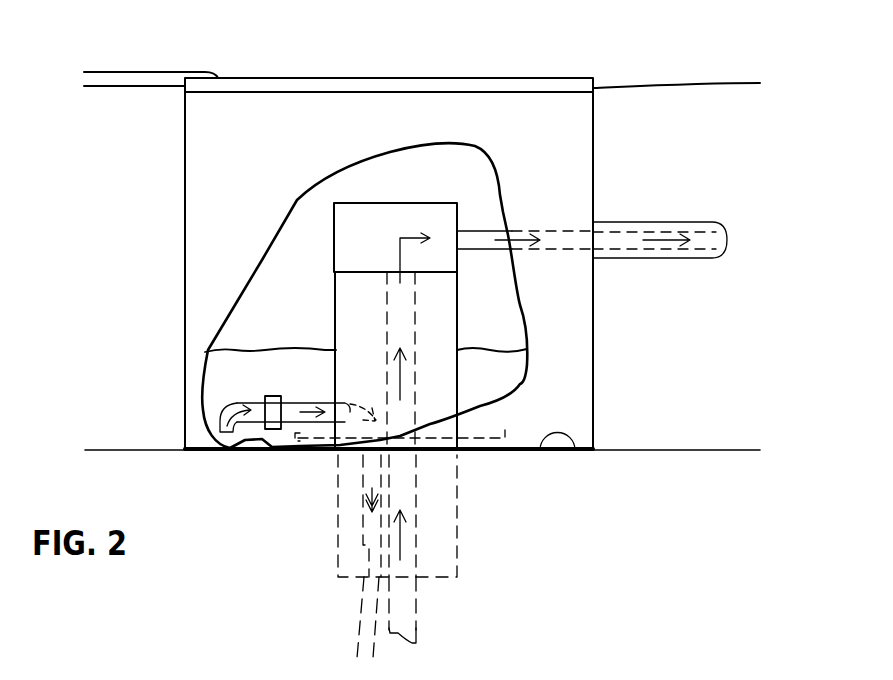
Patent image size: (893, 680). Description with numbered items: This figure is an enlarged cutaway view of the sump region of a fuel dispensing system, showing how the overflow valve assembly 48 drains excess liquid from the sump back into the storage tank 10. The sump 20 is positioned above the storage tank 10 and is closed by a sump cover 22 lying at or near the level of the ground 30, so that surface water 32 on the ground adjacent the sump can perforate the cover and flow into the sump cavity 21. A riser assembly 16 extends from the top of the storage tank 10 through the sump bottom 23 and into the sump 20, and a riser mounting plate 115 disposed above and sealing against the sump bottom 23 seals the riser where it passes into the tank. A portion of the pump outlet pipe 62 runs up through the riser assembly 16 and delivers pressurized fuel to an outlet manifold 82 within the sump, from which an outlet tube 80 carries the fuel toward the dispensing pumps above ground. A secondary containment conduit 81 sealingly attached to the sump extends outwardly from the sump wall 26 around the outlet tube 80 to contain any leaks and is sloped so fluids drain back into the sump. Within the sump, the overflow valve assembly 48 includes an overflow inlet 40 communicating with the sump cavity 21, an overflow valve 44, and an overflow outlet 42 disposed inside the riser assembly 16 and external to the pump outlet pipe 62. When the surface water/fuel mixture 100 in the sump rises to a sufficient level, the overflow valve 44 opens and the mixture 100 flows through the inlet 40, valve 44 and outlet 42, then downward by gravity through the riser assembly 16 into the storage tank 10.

The storage tank 10 is at (700, 450).
The riser assembly 16 is at (457, 313).
The sump 20 is at (210, 145).
The sump cavity 21 is at (502, 313).
The sump cover 22 is at (557, 83).
The sump bottom 23 is at (577, 452).
The sump wall 26 is at (597, 192).
The ground 30 is at (68, 183).
The surface water 32 is at (150, 78).
The overflow inlet 40 is at (232, 405).
The overflow outlet 42 is at (372, 468).
The overflow valve 44 is at (272, 395).
The overflow valve assembly 48 is at (118, 315).
The pump outlet pipe 62 is at (402, 305).
The outlet tube 80 is at (568, 240).
The secondary containment conduit 81 is at (693, 222).
The outlet manifold 82 is at (363, 225).
The surface water/fuel mixture 100 is at (263, 350).
The riser mounting plate 115 is at (505, 432).